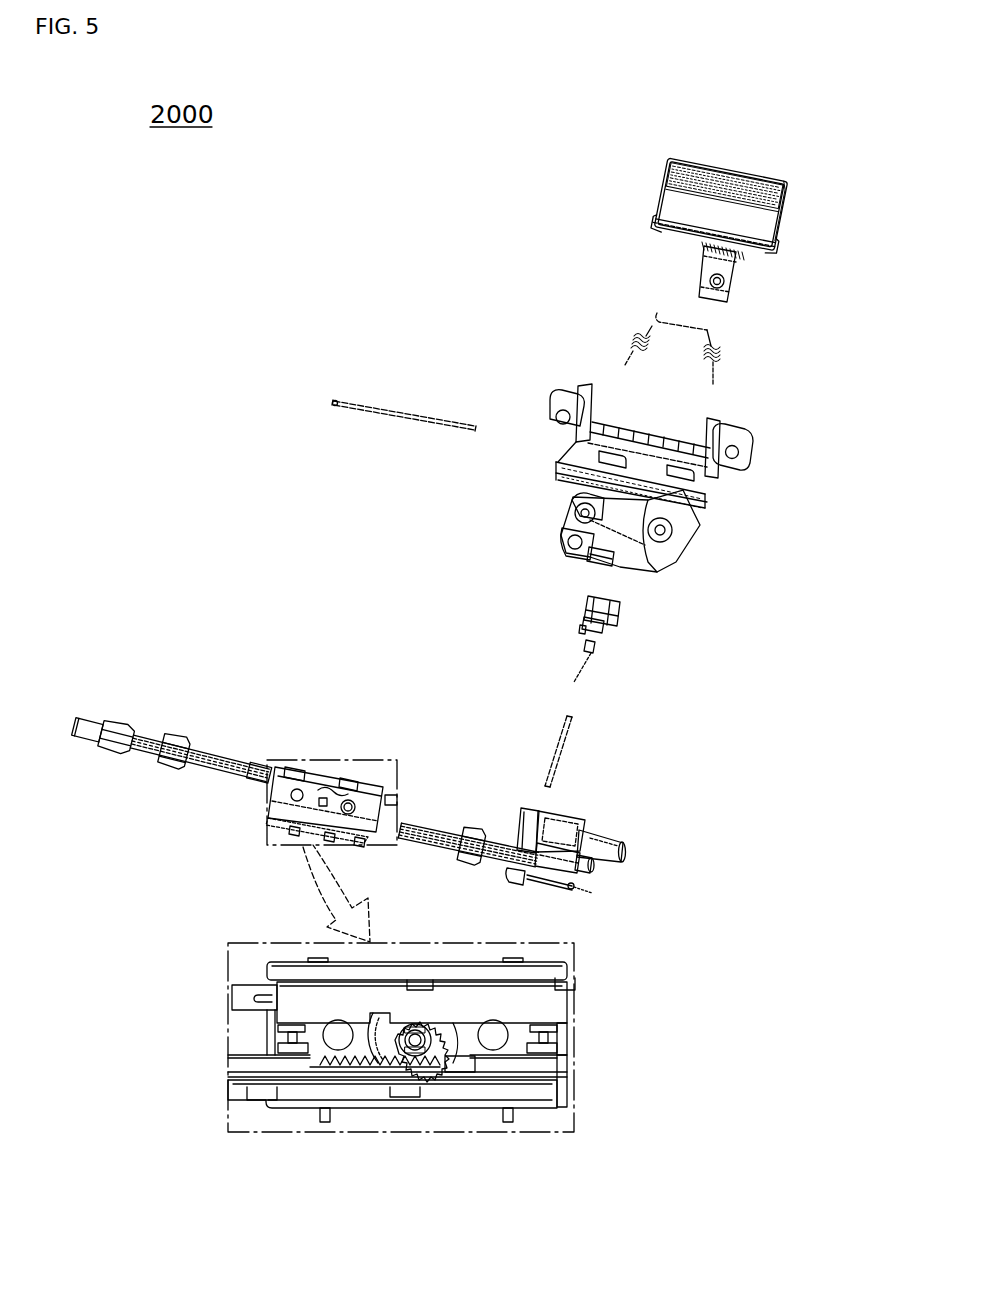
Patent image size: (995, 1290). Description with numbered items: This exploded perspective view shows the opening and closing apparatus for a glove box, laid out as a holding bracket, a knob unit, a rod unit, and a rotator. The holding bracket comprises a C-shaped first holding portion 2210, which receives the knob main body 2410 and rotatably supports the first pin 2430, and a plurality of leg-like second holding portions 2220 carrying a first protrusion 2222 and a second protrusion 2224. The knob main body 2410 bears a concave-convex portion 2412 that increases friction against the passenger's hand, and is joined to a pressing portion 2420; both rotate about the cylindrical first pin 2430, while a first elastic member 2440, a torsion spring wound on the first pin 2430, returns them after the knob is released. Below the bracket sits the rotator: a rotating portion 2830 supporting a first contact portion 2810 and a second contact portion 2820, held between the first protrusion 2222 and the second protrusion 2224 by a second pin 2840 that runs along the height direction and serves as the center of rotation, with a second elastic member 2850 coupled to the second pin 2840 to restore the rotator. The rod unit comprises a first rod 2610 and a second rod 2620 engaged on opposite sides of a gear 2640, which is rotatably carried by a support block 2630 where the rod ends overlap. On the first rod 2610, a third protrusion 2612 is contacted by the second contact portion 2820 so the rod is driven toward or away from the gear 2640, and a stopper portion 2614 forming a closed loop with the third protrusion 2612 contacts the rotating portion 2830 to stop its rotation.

The knob main body 2410 is at (678, 200).
The concave-convex portion 2412 is at (700, 149).
The pressing portion 2420 is at (720, 262).
The first elastic member 2440 is at (658, 318).
The first pin 2430 is at (398, 418).
The first holding portion 2210 is at (645, 458).
The second holding portions 2220 is at (565, 537).
The first protrusion 2222 is at (578, 512).
The second protrusion 2224 is at (600, 560).
The first contact portion 2810 is at (620, 608).
The second contact portion 2820 is at (605, 628).
The rotating portion 2830 is at (580, 630).
The second pin 2840 is at (588, 660).
The second elastic member 2850 is at (561, 742).
The second rod 2620 is at (196, 752).
The support block 2630 is at (320, 790).
The first rod 2610 is at (436, 826).
The third protrusion 2612 is at (520, 820).
The stopper portion 2614 is at (556, 830).
The gear 2640 is at (434, 1062).